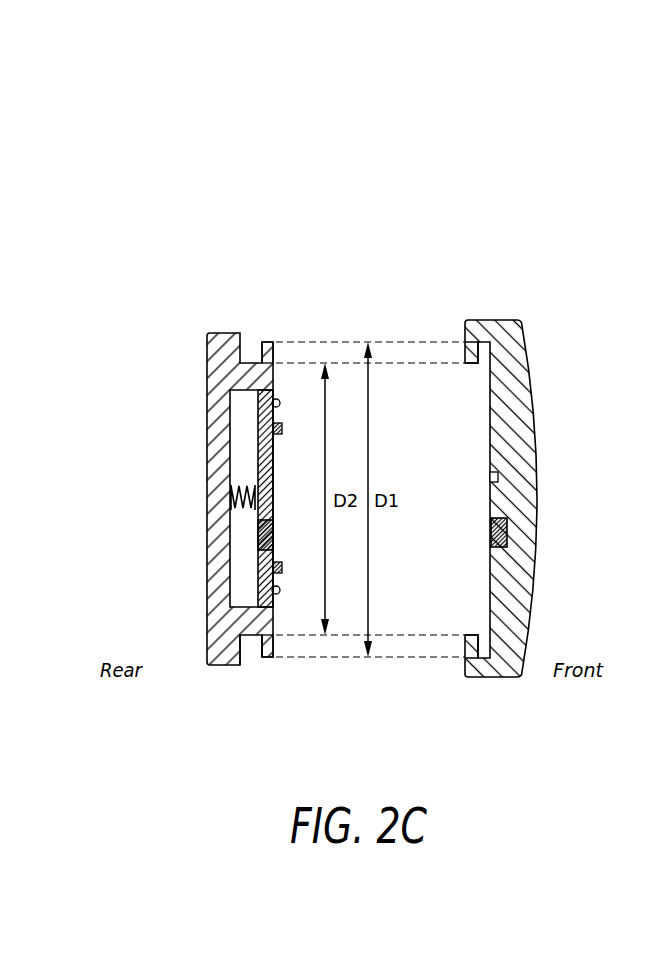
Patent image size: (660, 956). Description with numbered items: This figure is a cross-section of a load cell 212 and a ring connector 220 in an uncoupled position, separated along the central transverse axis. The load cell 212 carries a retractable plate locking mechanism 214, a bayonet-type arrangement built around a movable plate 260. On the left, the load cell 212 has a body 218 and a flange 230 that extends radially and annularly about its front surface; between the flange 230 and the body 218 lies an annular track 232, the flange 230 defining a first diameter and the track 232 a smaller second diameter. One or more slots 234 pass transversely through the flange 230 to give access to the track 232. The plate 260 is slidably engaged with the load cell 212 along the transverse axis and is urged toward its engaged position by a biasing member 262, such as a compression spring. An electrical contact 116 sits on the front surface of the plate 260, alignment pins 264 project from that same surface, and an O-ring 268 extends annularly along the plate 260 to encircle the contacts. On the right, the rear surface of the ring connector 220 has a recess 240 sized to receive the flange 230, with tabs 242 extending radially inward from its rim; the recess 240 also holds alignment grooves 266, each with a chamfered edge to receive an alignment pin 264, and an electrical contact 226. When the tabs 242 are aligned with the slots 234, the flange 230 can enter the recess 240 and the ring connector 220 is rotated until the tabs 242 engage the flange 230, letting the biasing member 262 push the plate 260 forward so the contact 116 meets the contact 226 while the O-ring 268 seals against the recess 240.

The electrical contact 116 is at (260, 532).
The load cell 212 is at (183, 350).
The retractable plate locking mechanism 214 is at (262, 228).
The body 218 is at (215, 418).
The ring connector 220 is at (492, 320).
The electrical contact 226 is at (492, 540).
The flange 230 is at (268, 660).
The track 232 is at (252, 676).
The slot 234 is at (265, 342).
The recess 240 is at (455, 607).
The tab 242 is at (465, 352).
The retractable plate 260 is at (258, 462).
The biasing member 262 is at (238, 492).
The alignment pin 264 is at (283, 424).
The alignment groove 266 is at (490, 478).
The O-ring 268 is at (270, 594).